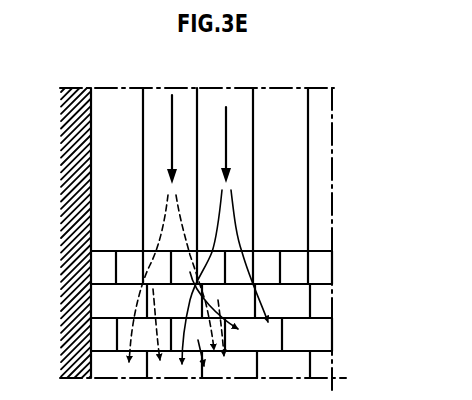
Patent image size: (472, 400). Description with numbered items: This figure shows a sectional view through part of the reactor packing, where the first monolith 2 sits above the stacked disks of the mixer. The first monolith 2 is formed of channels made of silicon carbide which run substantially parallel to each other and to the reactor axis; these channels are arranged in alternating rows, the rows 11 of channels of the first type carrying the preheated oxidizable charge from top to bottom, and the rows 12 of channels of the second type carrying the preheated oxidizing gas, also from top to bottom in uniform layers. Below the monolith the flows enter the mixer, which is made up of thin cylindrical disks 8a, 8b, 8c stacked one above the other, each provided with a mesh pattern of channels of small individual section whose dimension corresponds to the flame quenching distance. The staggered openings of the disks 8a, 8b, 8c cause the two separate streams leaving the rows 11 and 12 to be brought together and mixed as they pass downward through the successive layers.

The first monolith 2 is at (361, 170).
The rows of channels of the first type 11 is at (183, 88).
The rows of channels of the second type 12 is at (210, 122).
The disk 8a is at (326, 266).
The disk 8b is at (313, 302).
The disk 8c is at (326, 336).